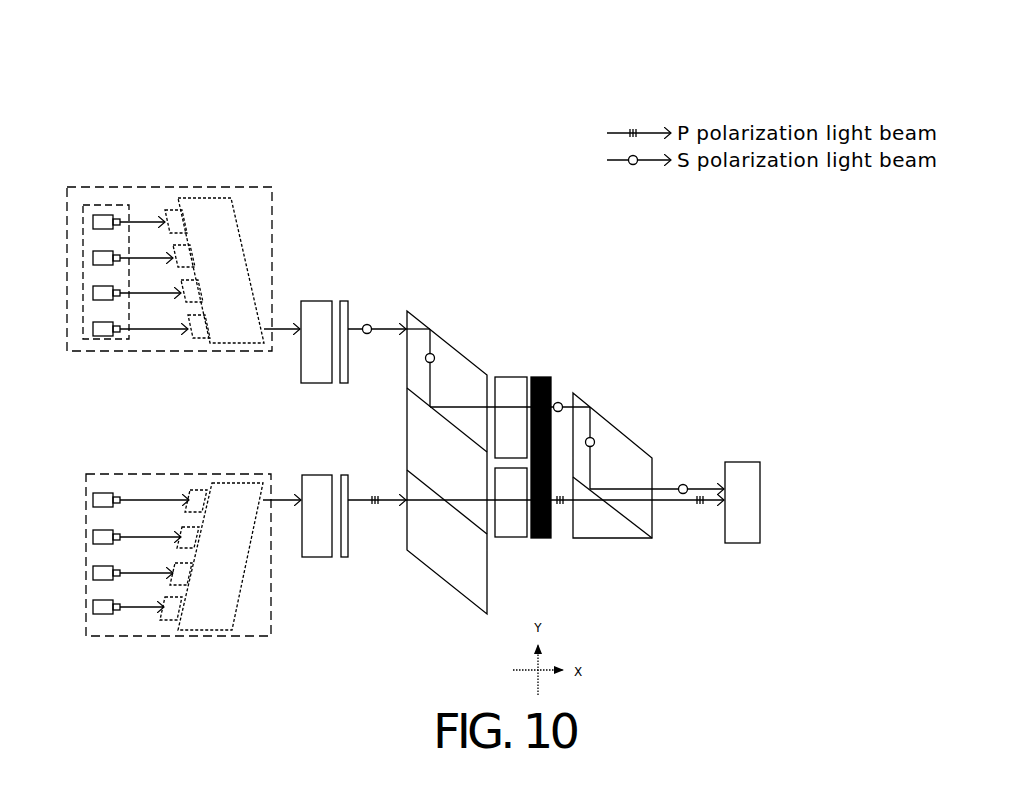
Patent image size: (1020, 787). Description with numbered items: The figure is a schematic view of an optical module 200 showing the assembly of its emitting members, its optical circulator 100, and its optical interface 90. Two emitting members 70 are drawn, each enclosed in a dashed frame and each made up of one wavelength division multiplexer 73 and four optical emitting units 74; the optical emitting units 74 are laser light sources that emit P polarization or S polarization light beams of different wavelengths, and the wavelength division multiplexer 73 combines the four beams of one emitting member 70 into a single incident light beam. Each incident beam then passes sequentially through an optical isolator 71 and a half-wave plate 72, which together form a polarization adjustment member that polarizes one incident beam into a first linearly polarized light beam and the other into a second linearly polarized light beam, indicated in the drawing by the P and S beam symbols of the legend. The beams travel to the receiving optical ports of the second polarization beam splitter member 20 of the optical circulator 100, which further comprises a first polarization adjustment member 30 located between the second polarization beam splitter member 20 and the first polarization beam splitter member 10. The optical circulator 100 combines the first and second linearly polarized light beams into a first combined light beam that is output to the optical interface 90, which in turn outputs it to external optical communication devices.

The optical module 200 is at (437, 90).
The optical circulator 100 is at (611, 276).
The emitting member 70 is at (268, 184).
The optical emitting unit 74 is at (103, 216).
The wavelength division multiplexer 73 is at (207, 210).
The optical isolator 71 is at (313, 310).
The half-wave plate 72 is at (345, 303).
The second polarization beam splitter member 20 is at (458, 340).
The first polarization adjustment member 30 is at (531, 375).
The first polarization beam splitter member 10 is at (631, 431).
The optical interface 90 is at (740, 470).